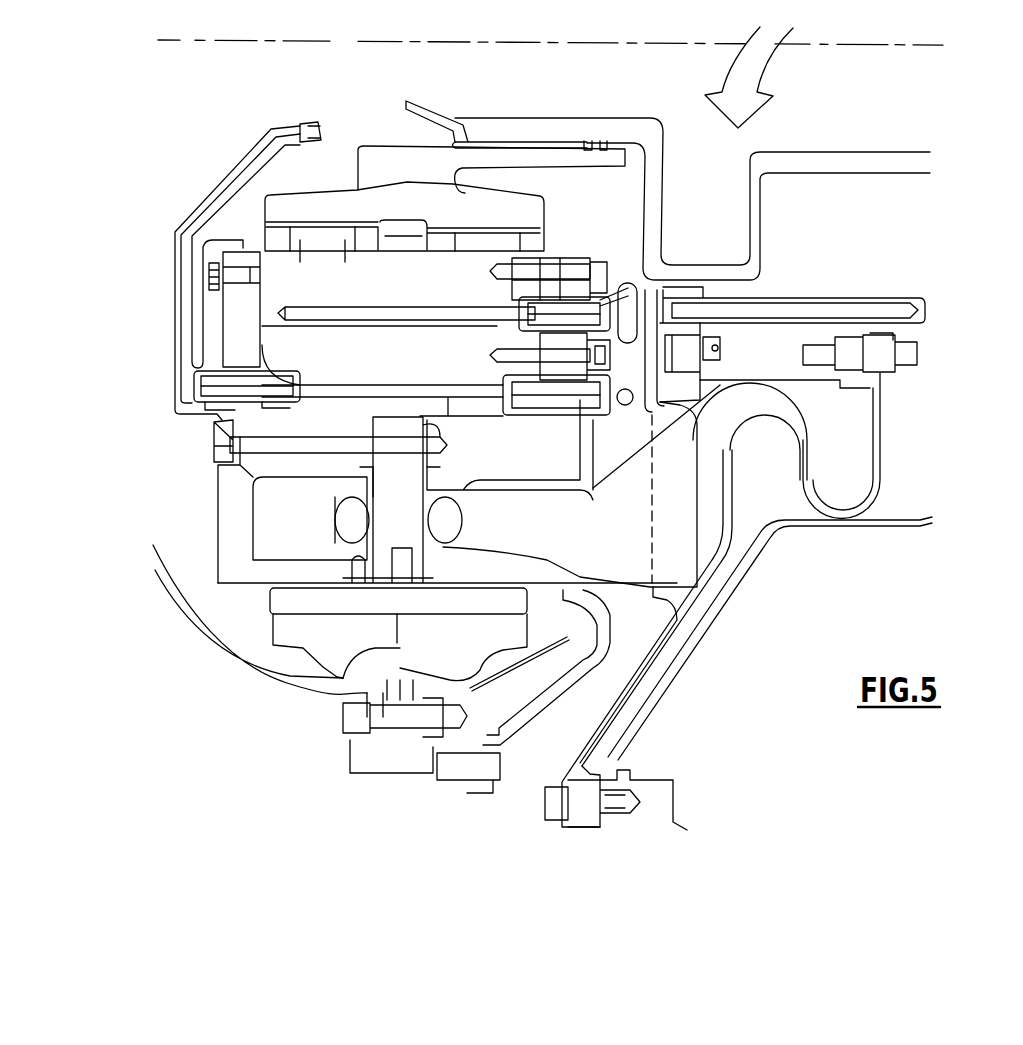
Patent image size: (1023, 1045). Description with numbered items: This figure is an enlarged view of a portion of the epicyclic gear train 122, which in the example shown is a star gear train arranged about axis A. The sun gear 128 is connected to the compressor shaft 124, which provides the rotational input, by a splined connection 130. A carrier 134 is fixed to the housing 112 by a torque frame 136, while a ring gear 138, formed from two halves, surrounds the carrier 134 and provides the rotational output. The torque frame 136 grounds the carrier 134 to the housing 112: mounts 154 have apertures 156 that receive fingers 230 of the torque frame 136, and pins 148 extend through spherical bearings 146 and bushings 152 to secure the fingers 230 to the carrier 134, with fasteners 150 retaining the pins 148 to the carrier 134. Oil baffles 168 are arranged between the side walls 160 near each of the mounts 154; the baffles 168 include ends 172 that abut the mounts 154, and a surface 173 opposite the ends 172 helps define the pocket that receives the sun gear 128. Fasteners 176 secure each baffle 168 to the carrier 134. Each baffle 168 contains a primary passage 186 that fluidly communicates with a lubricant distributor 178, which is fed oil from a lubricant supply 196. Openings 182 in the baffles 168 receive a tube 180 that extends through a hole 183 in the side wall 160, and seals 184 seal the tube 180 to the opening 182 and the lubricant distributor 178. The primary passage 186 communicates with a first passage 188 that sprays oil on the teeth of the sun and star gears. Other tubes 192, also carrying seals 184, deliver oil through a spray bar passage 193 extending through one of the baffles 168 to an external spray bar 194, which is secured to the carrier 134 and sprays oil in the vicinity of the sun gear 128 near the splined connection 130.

The axis of rotation A is at (352, 40).
The housing 112 is at (800, 437).
The epicyclic gear train 122 is at (542, 82).
The compressor shaft 124 is at (598, 125).
The sun gear 128 is at (447, 180).
The splined connection 130 is at (497, 142).
The carrier 134 is at (237, 577).
The torque frame 136 is at (615, 552).
The ring gear 138 is at (327, 653).
The spherical bearings 146 is at (445, 525).
The pins 148 is at (410, 488).
The fasteners 150 is at (217, 453).
The bushings 152 is at (335, 520).
The mounts 154 is at (283, 467).
The apertures 156 is at (317, 547).
The side walls 160 is at (230, 320).
The oil baffles 168 is at (405, 354).
The ends 172 is at (452, 412).
The surface 173 is at (404, 260).
The fasteners 176 is at (548, 345).
The lubricant distributor 178 is at (630, 363).
The tube 180 is at (590, 303).
The openings 182 is at (520, 321).
The hole 183 is at (547, 287).
The seals 184 is at (645, 262).
The primary passage 186 is at (365, 308).
The first passage 188 is at (358, 262).
The tubes 192 is at (230, 410).
The spray bar passage 193 is at (312, 376).
The external spray bar 194 is at (175, 328).
The lubricant supply 196 is at (625, 410).
The fingers 230 is at (528, 528).